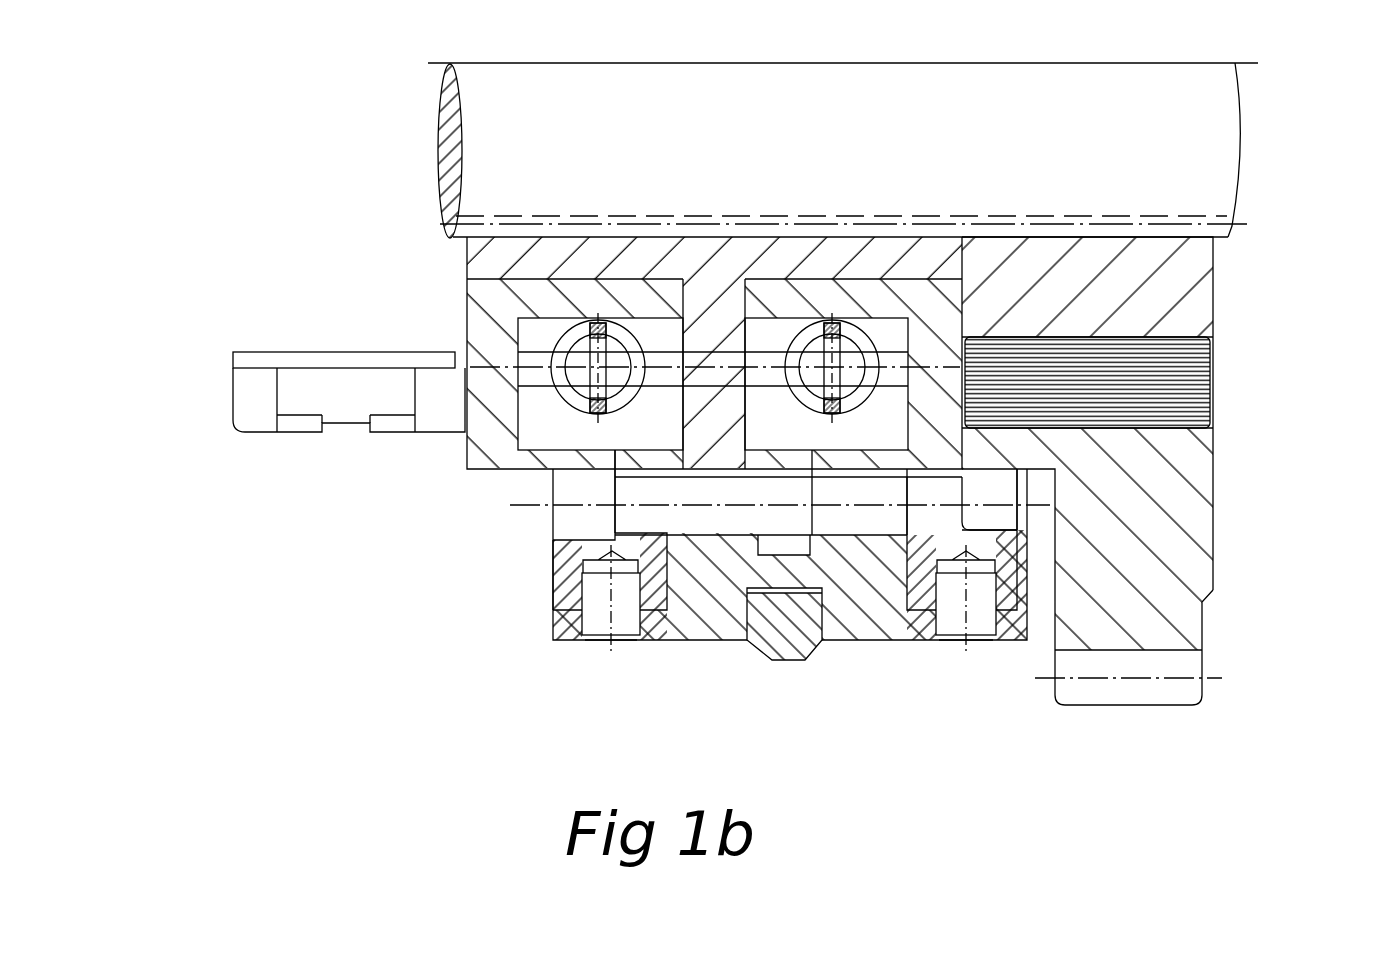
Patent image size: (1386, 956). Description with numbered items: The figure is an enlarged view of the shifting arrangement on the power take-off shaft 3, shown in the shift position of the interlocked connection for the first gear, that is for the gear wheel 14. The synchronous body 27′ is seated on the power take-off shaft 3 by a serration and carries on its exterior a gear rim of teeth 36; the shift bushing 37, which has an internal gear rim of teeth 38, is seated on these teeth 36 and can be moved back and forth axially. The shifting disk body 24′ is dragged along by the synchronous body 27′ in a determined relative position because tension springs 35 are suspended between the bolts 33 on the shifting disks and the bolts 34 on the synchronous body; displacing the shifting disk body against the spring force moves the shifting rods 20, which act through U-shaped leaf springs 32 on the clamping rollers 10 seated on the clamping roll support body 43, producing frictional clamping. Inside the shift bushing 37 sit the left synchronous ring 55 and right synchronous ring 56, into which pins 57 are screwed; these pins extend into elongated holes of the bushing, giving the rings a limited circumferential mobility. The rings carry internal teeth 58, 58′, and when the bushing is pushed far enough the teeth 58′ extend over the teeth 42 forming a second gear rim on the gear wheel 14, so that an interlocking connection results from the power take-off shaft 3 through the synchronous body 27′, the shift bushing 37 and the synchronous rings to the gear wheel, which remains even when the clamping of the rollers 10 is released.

The power take-off shaft 3 is at (1205, 138).
The clamping rollers 10 is at (1182, 394).
The gear wheel for the first gear 14 is at (1183, 566).
The shifting rods 20 is at (255, 402).
The shifting disk body 24′ is at (920, 303).
The synchronous body 27′ is at (712, 278).
The leaf springs 32 is at (290, 360).
The bolts 33 is at (543, 368).
The bolts 34 is at (697, 368).
The tension springs 35 is at (597, 322).
The teeth 36 is at (600, 545).
The shift bushing 37 is at (700, 607).
The teeth 38 is at (847, 502).
The teeth 42 is at (1012, 582).
The clamping roll support body 43 is at (1177, 278).
The left synchronous ring 55 is at (567, 568).
The right synchronous ring 56 is at (997, 502).
The pins 57 is at (593, 637).
The teeth 58 is at (578, 505).
The teeth 58′ is at (930, 502).